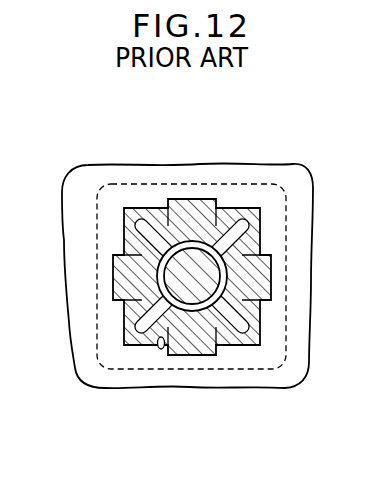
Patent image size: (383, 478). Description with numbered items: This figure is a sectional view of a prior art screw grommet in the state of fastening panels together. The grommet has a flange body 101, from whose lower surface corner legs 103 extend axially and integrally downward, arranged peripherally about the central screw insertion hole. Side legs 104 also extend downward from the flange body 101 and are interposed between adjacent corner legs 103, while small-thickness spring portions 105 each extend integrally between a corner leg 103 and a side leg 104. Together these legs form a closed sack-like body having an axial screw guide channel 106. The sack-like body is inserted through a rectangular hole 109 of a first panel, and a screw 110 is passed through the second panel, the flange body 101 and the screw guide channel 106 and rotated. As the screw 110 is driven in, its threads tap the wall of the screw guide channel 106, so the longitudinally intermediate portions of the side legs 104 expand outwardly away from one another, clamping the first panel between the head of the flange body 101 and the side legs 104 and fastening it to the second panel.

The flange body 101 is at (268, 195).
The corner legs 103 is at (127, 208).
The side legs 104 is at (199, 199).
The small-thickness spring portions 105 is at (162, 210).
The screw guide channel 106 is at (230, 345).
The rectangular hole 109 is at (161, 349).
The screw 110 is at (180, 347).